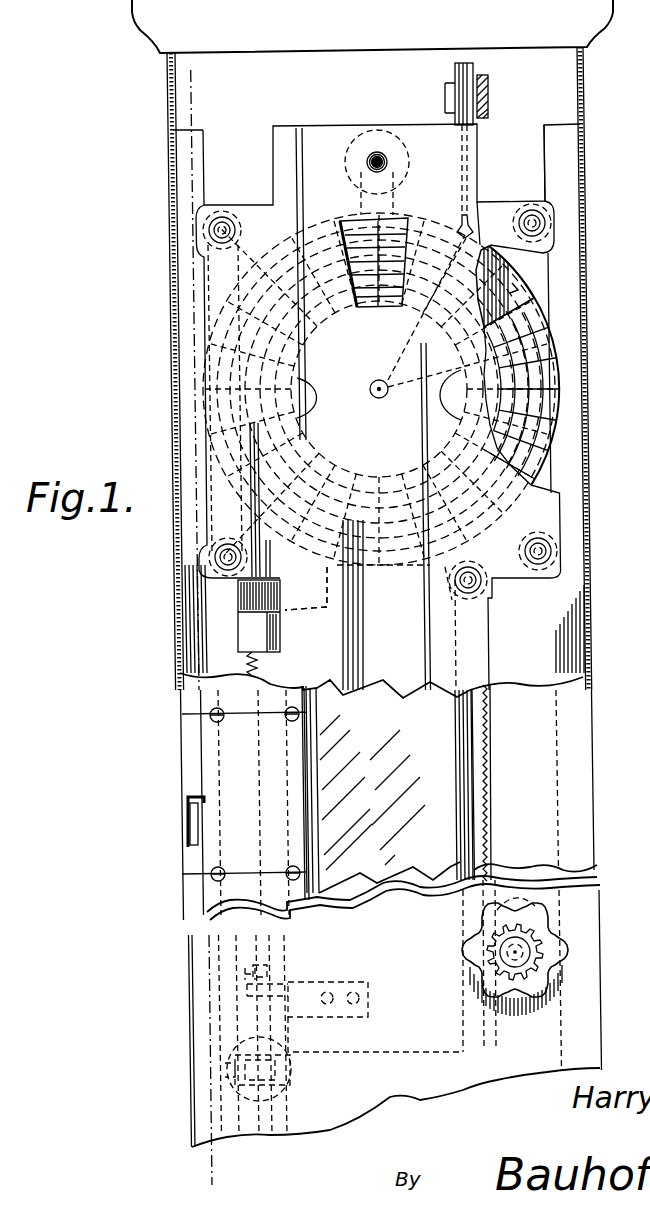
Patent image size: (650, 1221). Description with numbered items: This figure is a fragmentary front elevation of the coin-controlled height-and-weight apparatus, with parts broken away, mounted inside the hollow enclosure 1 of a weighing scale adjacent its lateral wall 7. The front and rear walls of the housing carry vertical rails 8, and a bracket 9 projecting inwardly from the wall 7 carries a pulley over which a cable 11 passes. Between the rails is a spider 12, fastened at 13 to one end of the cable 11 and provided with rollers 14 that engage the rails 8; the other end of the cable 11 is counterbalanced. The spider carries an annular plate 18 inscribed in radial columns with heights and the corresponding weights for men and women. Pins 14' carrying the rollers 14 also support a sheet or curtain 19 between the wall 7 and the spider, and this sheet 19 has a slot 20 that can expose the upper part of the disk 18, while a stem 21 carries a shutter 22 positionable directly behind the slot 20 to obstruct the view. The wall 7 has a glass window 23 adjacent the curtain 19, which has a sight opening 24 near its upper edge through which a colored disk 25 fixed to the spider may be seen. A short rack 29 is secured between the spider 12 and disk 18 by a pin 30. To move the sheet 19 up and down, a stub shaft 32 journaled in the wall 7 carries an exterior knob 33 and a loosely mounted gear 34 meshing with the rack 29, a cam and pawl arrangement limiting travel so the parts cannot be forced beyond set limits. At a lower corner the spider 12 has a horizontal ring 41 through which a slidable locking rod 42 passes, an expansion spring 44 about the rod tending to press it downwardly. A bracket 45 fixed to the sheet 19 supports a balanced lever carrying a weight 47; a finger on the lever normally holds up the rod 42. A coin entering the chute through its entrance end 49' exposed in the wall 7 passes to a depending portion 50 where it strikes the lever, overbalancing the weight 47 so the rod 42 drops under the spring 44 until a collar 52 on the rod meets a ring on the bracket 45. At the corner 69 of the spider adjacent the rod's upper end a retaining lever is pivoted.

The hollow enclosure 1 is at (584, 202).
The lateral wall 7 is at (570, 818).
The vertical rails 8 is at (544, 158).
The bracket 9 is at (490, 97).
The cable 11 is at (455, 70).
The spider 12 is at (527, 260).
The fastening 13 is at (442, 238).
The rollers 14 is at (342, 410).
The pins 14' is at (381, 390).
The annular plate 18 is at (550, 373).
The sheet or curtain 19 is at (465, 632).
The slot 20 is at (375, 308).
The stem 21 is at (370, 388).
The shutter 22 is at (530, 290).
The glass window 23 is at (388, 790).
The sight opening 24 is at (372, 162).
The colored disk 25 is at (345, 145).
The short rack 29 is at (492, 787).
The pin 30 is at (460, 588).
The stub shaft 32 is at (515, 967).
The knob 33 is at (560, 925).
The gear 34 is at (516, 907).
The horizontal ring 41 is at (248, 660).
The locking rod 42 is at (252, 762).
The expansion spring 44 is at (262, 664).
The bracket 45 is at (293, 1031).
The weight 47 is at (295, 1088).
The entrance end 49' is at (175, 822).
The depending portion 50 is at (270, 966).
The collar 52 is at (270, 973).
The corner 69 is at (303, 612).